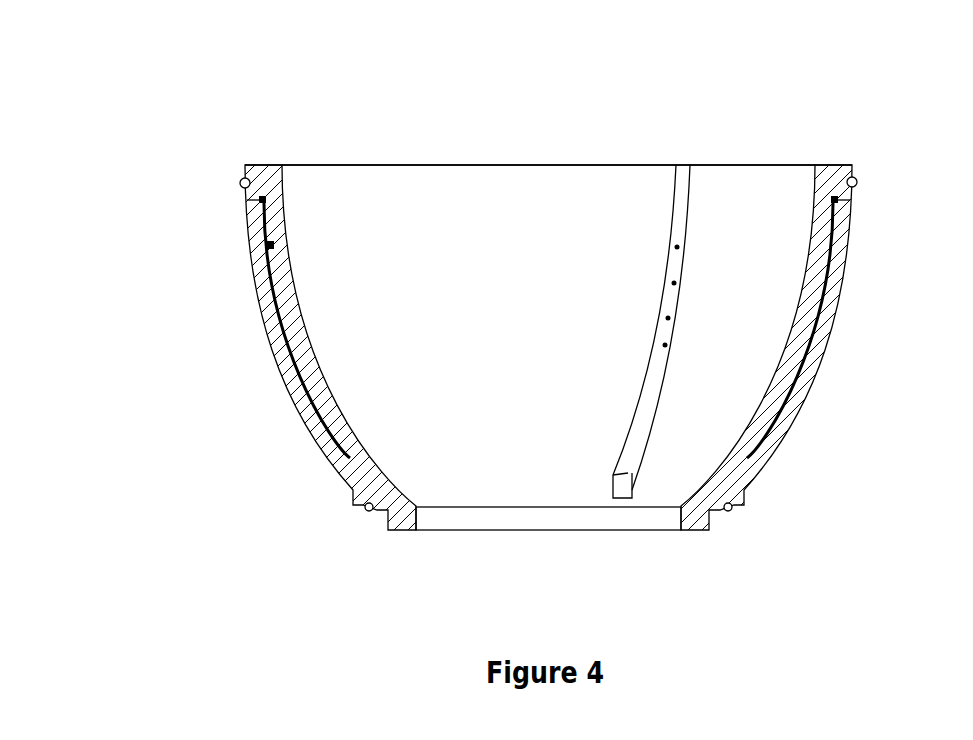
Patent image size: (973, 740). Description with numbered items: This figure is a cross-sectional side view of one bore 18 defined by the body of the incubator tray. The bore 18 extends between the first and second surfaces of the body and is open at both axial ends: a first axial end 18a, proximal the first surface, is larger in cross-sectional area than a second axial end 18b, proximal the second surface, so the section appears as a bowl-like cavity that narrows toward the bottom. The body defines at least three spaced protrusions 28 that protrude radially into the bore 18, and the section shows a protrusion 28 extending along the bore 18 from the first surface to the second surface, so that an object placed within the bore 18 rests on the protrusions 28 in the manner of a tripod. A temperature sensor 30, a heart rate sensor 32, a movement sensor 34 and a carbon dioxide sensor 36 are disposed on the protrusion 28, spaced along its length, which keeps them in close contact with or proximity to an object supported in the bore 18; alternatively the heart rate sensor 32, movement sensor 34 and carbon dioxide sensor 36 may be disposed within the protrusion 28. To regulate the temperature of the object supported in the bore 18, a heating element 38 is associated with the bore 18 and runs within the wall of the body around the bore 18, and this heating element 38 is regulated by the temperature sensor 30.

The bore 18 is at (523, 231).
The first axial end 18a is at (412, 165).
The second axial end 18b is at (457, 530).
The protrusion 28 is at (682, 200).
The temperature sensor 30 is at (680, 245).
The heart rate sensor 32 is at (678, 281).
The movement sensor 34 is at (672, 316).
The carbon dioxide sensor 36 is at (669, 347).
The heating element 38 is at (270, 258).